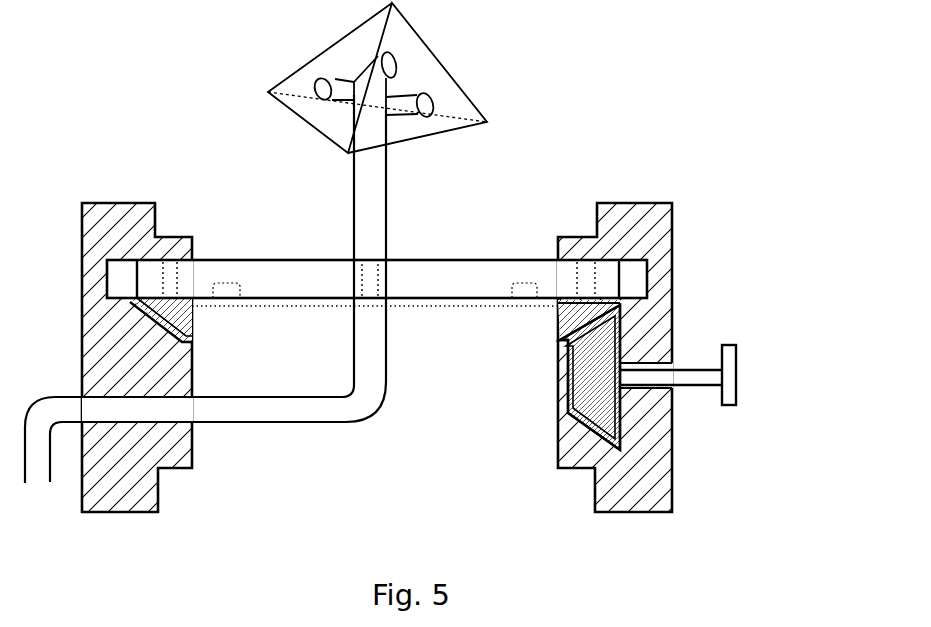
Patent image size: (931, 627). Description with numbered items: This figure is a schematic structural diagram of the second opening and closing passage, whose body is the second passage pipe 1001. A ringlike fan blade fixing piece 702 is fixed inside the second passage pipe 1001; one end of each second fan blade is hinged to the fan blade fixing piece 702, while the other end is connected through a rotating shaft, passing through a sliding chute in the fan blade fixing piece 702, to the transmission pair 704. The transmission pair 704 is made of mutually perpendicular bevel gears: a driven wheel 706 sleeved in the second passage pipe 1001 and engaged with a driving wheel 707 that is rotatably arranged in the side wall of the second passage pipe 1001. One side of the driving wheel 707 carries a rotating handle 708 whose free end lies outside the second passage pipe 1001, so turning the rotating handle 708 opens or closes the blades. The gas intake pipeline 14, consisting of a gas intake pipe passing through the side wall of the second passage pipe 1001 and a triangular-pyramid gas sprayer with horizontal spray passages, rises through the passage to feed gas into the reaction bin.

The second passage pipe 1001 is at (117, 202).
The fan blade fixing piece 702 is at (512, 258).
The gas intake pipeline 14 is at (388, 147).
The transmission pair 704 is at (511, 375).
The driven wheel 706 is at (573, 318).
The driving wheel 707 is at (587, 380).
The rotating handle 708 is at (737, 344).